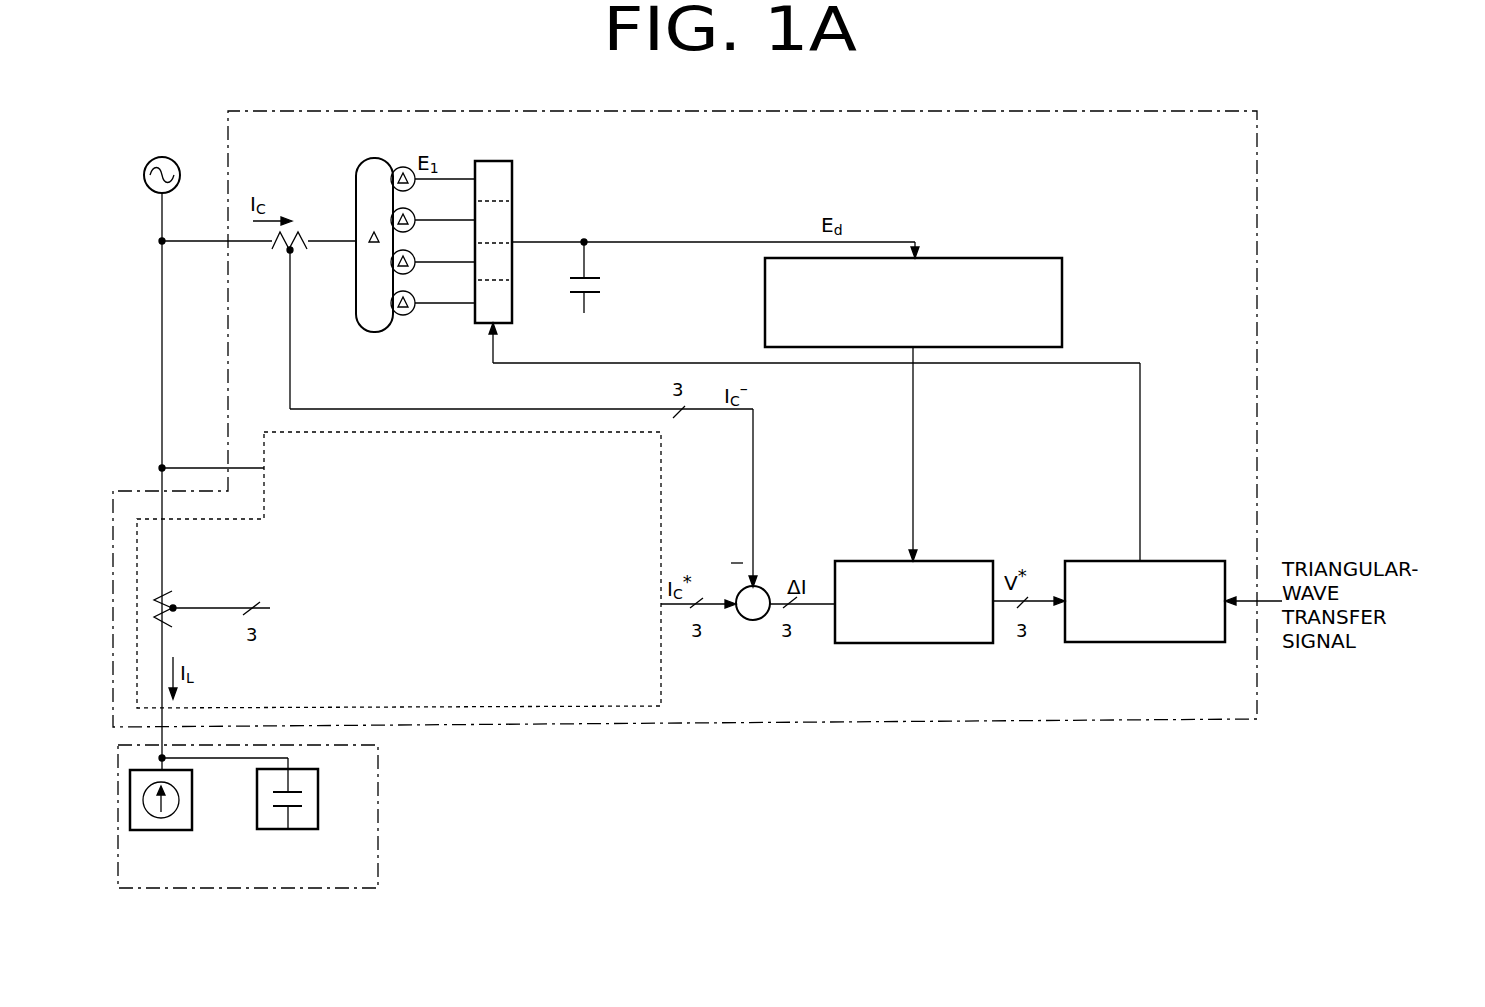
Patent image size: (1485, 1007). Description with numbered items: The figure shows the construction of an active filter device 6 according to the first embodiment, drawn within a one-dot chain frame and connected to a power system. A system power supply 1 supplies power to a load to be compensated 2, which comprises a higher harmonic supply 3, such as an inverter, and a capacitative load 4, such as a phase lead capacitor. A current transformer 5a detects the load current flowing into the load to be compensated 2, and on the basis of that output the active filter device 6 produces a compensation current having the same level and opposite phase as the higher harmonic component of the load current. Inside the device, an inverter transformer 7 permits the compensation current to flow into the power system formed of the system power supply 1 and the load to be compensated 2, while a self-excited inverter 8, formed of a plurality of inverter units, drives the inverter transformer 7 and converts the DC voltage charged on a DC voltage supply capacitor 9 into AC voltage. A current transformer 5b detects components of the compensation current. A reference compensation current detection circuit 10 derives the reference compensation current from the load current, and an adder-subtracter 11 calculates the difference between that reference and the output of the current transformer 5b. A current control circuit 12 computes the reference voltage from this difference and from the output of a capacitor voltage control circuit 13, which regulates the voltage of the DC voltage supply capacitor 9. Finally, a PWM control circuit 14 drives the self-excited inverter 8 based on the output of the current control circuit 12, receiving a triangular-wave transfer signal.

The system power supply 1 is at (162, 157).
The load to be compensated 2 is at (378, 835).
The higher harmonic supply 3 is at (192, 792).
The capacitative load 4 is at (318, 792).
The current transformer 5a is at (175, 596).
The current transformer 5b is at (292, 252).
The active filter device 6 is at (601, 724).
The inverter transformer 7 is at (352, 158).
The self-excited inverter 8 is at (492, 158).
The DC voltage supply capacitor 9 is at (567, 283).
The reference compensation current detection circuit 10 is at (661, 684).
The adder-subtracter 11 is at (758, 620).
The current control circuit 12 is at (925, 643).
The capacitor voltage control circuit 13 is at (980, 258).
The PWM control circuit 14 is at (1150, 642).